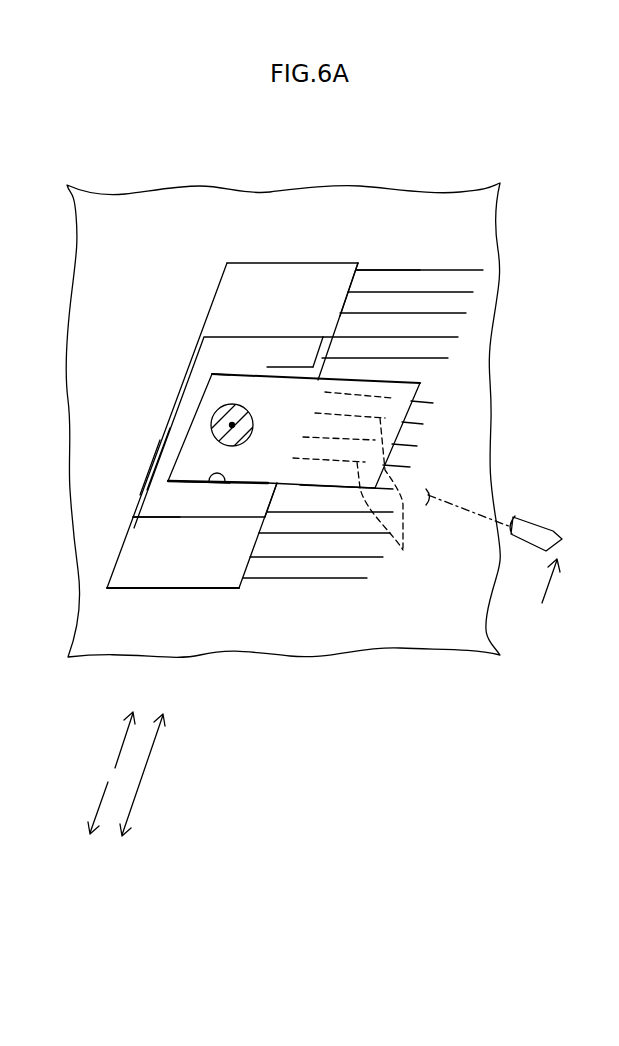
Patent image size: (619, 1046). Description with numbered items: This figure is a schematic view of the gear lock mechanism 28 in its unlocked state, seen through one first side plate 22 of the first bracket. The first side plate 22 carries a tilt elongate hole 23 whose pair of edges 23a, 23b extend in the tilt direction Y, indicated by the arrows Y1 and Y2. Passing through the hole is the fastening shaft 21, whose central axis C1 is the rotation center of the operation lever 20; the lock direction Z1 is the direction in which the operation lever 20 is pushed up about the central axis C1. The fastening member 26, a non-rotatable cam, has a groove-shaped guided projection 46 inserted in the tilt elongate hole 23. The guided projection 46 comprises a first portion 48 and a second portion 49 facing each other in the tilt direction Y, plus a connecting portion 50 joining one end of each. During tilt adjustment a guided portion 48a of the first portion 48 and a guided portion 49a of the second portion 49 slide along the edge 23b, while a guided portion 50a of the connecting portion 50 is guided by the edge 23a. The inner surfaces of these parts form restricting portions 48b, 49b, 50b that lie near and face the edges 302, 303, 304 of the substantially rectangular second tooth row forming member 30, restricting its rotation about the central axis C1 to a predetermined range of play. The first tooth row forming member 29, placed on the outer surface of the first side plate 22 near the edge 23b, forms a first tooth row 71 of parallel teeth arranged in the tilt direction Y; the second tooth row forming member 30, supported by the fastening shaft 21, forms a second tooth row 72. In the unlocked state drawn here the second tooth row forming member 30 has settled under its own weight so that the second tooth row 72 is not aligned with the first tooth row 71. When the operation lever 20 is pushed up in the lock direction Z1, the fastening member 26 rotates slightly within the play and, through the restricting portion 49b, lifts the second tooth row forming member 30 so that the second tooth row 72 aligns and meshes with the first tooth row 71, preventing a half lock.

The operation lever 20 is at (527, 527).
The fastening shaft 21 is at (252, 402).
The first side plate 22 is at (409, 180).
The tilt elongate hole 23 is at (279, 266).
The edge of tilt elongate hole 23a is at (116, 562).
The edge of tilt elongate hole 23b is at (240, 562).
The fastening member 26 is at (157, 529).
The gear lock mechanism 28 is at (454, 381).
The first tooth row forming member 29 is at (440, 258).
The second tooth row forming member 30 is at (343, 499).
The guided projection 46 is at (238, 324).
The first portion 48 is at (261, 345).
The guided portion 48a is at (320, 333).
The restricting portion 48b is at (278, 380).
The second portion 49 is at (198, 498).
The guided portion 49a is at (267, 487).
The restricting portion 49b is at (228, 484).
The connecting portion 50 is at (180, 435).
The guided portion 50a is at (160, 457).
The restricting portion 50b is at (207, 403).
The first tooth row 71 is at (437, 335).
The second tooth row 72 is at (338, 485).
The edge of second tooth row forming member 302 is at (285, 378).
The edge of second tooth row forming member 303 is at (187, 485).
The edge of second tooth row forming member 304 is at (212, 378).
The central axis C1 is at (236, 428).
The lock direction Z1 is at (552, 582).
The tilt direction Y is at (146, 773).
The tilt direction component Y1 is at (118, 741).
The tilt direction component Y2 is at (104, 793).